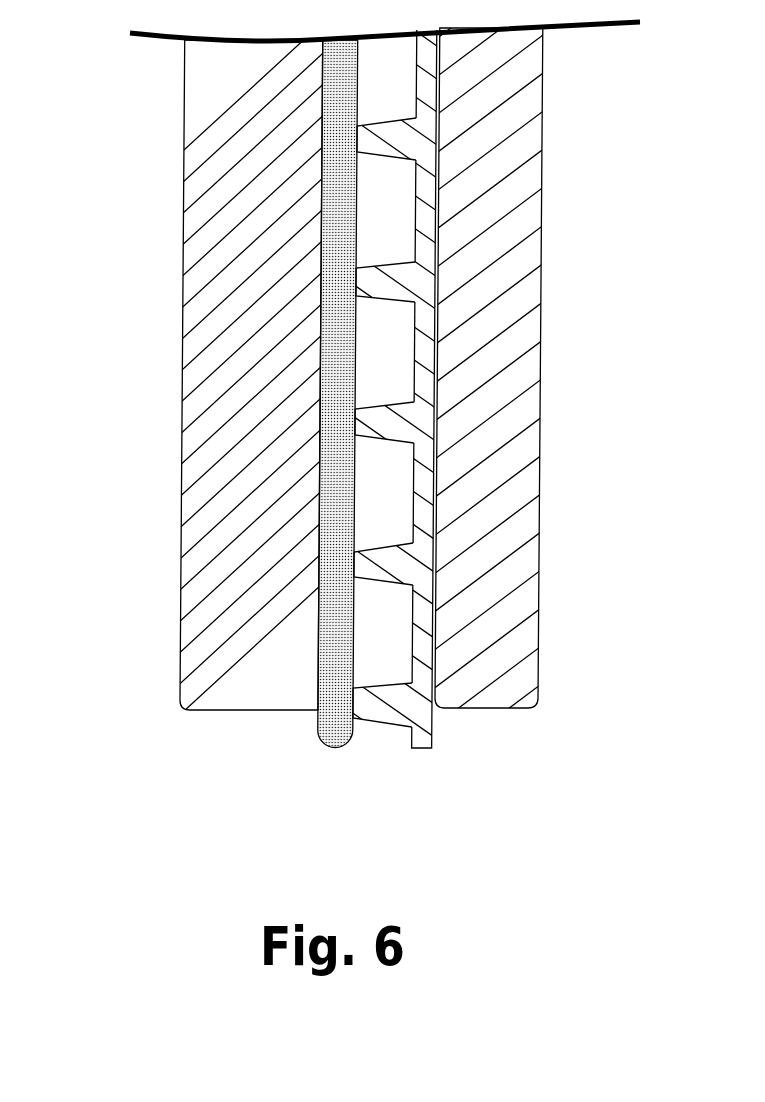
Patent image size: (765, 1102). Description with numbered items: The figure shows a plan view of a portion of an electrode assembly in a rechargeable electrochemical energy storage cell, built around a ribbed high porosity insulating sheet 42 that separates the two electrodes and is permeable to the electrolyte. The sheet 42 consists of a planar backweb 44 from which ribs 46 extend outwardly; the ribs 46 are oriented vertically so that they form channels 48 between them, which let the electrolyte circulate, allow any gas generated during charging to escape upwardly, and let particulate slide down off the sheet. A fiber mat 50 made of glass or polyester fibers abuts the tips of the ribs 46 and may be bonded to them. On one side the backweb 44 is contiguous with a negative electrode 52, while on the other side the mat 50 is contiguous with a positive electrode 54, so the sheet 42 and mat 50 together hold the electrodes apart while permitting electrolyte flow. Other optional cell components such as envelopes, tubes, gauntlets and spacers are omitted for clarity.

The ribbed high porosity insulating sheet 42 is at (506, 410).
The planar backweb 44 is at (539, 403).
The ribs 46 is at (377, 285).
The channels 48 is at (383, 355).
The fiber mat 50 is at (342, 181).
The negative electrode 52 is at (492, 592).
The positive electrode 54 is at (237, 368).